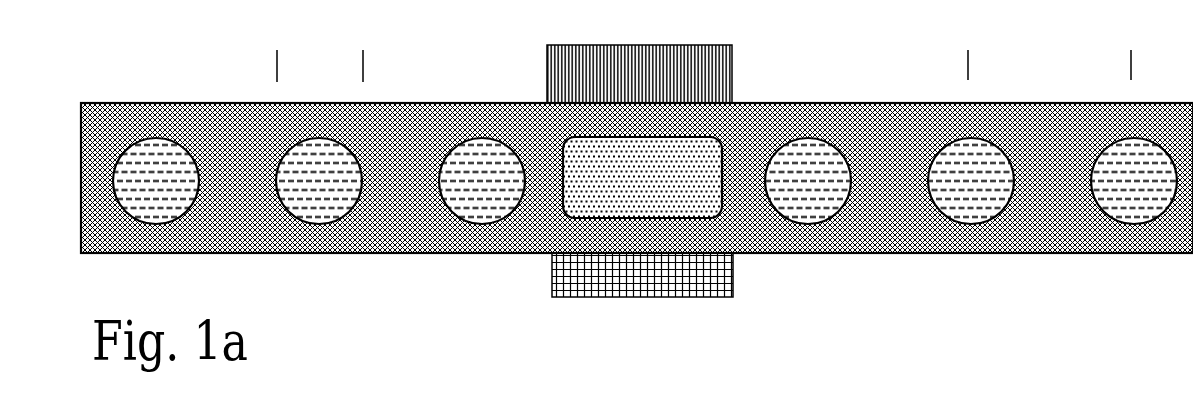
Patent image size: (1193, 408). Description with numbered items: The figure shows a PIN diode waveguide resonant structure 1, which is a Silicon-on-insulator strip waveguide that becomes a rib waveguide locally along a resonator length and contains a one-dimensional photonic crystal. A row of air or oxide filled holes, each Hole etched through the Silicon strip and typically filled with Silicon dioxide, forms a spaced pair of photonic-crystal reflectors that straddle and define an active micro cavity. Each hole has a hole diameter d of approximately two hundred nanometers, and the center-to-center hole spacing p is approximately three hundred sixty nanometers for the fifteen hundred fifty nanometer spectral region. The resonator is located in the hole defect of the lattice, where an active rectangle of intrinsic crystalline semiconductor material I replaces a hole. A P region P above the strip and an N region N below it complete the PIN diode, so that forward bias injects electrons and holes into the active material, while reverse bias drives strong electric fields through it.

The PIN diode waveguide resonant structure 1 is at (61, 54).
The hole Hole is at (326, 194).
The P region P is at (639, 74).
The N region N is at (642, 275).
The intrinsic region I is at (642, 177).
The hole diameter d is at (361, 63).
The center-to-center hole spacing p is at (970, 63).